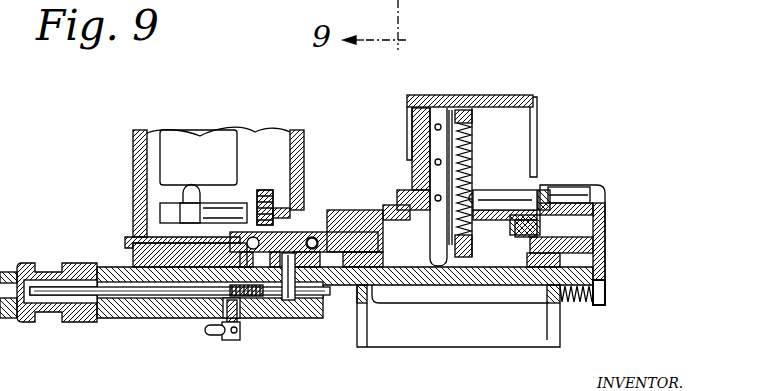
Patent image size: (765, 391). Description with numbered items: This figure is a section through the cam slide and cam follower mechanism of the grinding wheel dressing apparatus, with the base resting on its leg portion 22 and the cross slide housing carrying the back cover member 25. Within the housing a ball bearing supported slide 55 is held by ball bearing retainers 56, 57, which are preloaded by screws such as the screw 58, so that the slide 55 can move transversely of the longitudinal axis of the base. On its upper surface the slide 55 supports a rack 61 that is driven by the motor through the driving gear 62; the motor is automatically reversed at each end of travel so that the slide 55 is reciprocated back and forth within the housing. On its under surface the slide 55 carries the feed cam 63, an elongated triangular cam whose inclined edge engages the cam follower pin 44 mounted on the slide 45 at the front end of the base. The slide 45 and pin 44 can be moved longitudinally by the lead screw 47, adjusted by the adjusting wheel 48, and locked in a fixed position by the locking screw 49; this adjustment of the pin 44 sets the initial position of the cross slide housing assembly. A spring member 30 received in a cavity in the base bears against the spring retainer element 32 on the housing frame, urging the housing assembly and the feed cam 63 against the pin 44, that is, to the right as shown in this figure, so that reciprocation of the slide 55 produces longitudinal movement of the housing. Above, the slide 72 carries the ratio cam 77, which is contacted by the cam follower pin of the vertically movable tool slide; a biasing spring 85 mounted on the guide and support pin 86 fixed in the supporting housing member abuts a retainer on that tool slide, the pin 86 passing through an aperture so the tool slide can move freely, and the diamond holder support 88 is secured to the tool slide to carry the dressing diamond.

The leg portion 22 is at (600, 250).
The cover member 25 is at (598, 223).
The spring member 30 is at (583, 304).
The spring retainer element 32 is at (606, 290).
The cam follower pin 44 is at (357, 337).
The slide 45 is at (250, 300).
The lead screw 47 is at (123, 290).
The adjusting wheel 48 is at (78, 320).
The locking screw 49 is at (230, 338).
The ball bearing supported slide 55 is at (303, 190).
The ball bearing retainer 56 is at (314, 238).
The ball bearing retainer 57 is at (252, 238).
The screw 58 is at (127, 243).
The rack 61 is at (282, 212).
The driving gear 62 is at (183, 212).
The feed cam 63 is at (268, 258).
The slide 72 is at (530, 205).
The ratio cam 77 is at (515, 200).
The biasing spring 85 is at (473, 148).
The guide and support pin 86 is at (473, 157).
The diamond holder support 88 is at (497, 95).